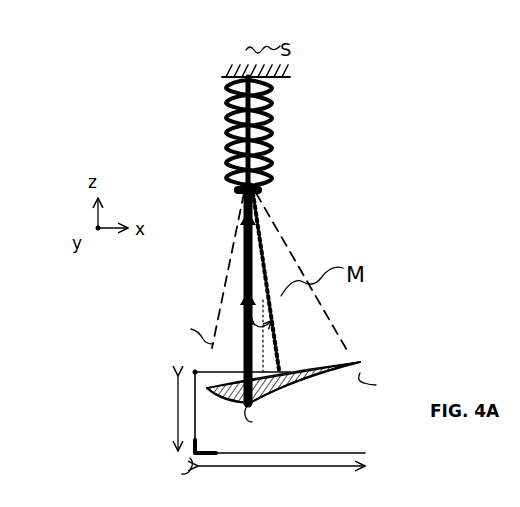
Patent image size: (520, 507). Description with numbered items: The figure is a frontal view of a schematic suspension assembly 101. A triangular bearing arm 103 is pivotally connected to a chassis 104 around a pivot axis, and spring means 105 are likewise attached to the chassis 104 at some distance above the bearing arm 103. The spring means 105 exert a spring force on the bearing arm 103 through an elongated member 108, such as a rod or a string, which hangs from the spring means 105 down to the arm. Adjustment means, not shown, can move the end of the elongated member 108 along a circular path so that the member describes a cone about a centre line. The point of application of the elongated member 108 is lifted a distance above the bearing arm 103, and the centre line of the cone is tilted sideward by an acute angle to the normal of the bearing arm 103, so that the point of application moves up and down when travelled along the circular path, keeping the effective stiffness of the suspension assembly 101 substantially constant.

The suspension assembly 101 is at (178, 148).
The bearing arm 103 is at (316, 458).
The chassis 104 is at (292, 74).
The spring means 105 is at (276, 115).
The elongated member 108 is at (240, 278).